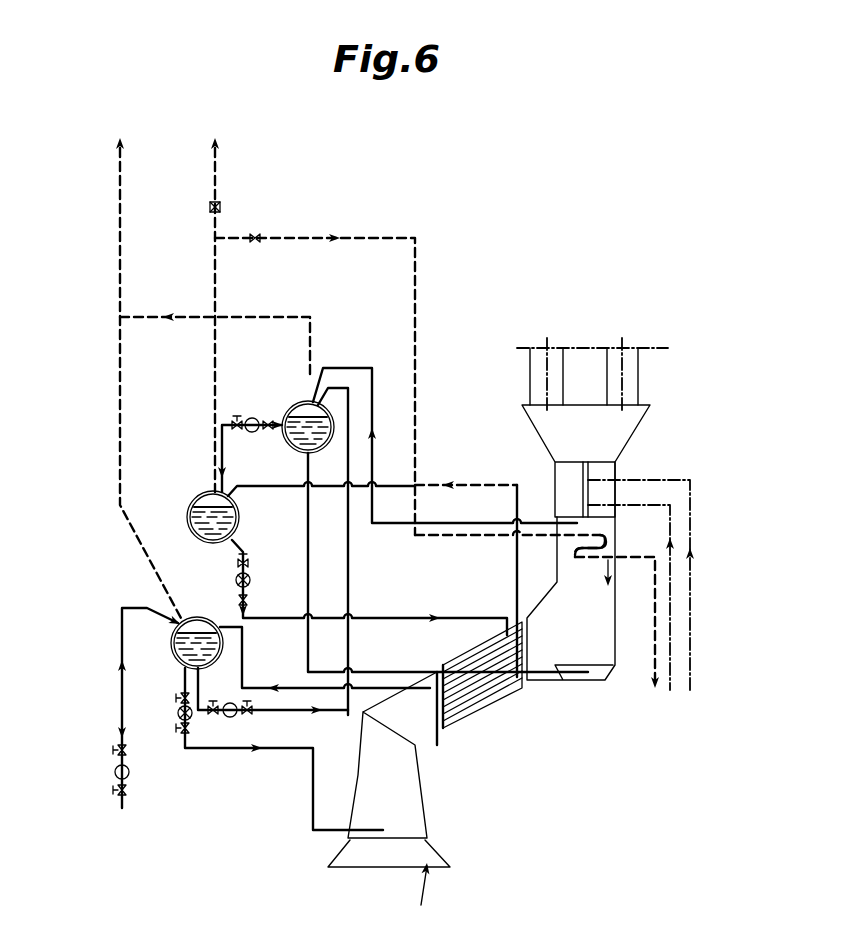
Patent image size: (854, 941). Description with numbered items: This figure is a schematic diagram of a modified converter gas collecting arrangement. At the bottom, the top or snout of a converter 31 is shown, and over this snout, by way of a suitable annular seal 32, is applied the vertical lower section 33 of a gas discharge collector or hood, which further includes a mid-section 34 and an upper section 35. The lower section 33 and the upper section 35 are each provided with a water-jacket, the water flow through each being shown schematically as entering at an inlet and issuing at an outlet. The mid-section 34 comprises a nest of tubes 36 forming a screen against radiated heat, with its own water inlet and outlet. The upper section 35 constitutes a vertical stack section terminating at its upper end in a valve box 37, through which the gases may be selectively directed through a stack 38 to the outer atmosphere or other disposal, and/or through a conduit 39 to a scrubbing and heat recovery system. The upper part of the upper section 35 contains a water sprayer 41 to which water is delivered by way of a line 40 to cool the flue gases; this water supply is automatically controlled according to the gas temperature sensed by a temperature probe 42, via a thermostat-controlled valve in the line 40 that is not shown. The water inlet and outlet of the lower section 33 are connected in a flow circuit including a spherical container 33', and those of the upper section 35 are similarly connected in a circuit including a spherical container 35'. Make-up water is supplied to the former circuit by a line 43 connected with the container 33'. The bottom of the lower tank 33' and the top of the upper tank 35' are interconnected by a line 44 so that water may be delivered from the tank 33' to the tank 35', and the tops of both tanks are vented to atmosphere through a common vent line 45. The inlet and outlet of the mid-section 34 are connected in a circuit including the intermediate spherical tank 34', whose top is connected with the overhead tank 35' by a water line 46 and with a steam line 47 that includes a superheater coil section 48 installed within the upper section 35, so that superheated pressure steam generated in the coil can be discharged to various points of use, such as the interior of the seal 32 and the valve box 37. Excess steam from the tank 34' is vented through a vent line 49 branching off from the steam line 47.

The snout of a converter 31 is at (432, 893).
The annular seal 32 is at (428, 840).
The vertical lower section 33 is at (425, 757).
The spherical container 33' is at (178, 652).
The mid-section 34 is at (445, 562).
The intermediate spherical tank 34' is at (198, 526).
The upper section 35 is at (591, 571).
The spherical container 35' is at (288, 441).
The nest of tubes 36 is at (460, 710).
The valve box 37 is at (613, 442).
The stack 38 is at (538, 370).
The conduit 39 is at (627, 373).
The line 40 is at (690, 532).
The water sprayer 41 is at (585, 498).
The temperature probe 42 is at (610, 572).
The line 43 is at (122, 707).
The line 44 is at (270, 711).
The common vent line 45 is at (118, 355).
The water line 46 is at (220, 442).
The steam line 47 is at (310, 238).
The superheater coil section 48 is at (577, 560).
The vent line 49 is at (218, 218).